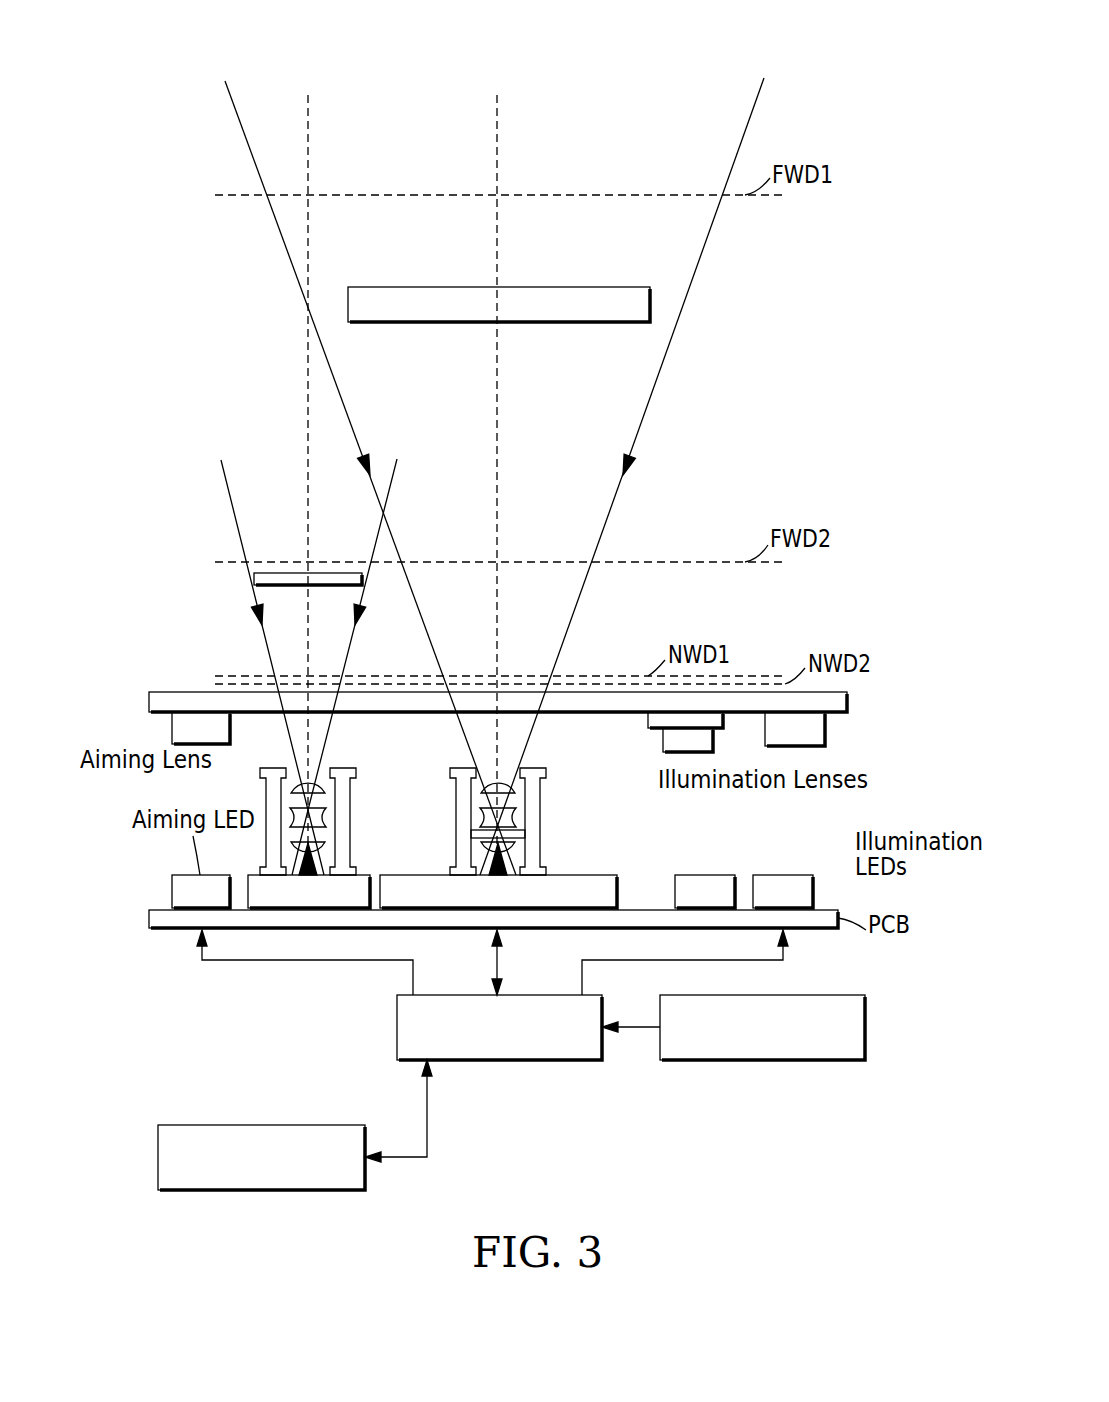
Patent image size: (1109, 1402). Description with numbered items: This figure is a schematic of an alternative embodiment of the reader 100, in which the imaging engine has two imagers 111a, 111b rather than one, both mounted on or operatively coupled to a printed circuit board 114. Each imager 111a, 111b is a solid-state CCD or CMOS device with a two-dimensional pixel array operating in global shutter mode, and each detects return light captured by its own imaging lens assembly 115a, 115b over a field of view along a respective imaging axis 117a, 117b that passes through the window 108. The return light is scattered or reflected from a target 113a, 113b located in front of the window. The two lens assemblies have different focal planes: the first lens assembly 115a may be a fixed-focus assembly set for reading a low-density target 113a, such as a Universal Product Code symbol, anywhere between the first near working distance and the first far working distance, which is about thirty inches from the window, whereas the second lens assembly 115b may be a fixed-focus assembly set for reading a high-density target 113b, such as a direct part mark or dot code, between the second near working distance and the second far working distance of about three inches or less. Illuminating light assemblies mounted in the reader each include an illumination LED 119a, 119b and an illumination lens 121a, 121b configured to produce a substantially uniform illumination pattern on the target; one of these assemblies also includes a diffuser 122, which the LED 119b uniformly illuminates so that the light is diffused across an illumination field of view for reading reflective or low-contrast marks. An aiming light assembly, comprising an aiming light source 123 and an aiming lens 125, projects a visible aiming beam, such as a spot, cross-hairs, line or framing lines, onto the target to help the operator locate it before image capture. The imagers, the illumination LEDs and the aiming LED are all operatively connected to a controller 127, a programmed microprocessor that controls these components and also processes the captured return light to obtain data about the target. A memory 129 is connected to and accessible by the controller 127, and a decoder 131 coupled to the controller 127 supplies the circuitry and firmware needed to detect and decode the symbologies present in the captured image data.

The reader 100 is at (160, 36).
The window 108 is at (149, 703).
The first imager 111a is at (590, 875).
The second imager 111b is at (372, 875).
The first target 113a is at (573, 325).
The second target 113b is at (283, 572).
The printed circuit board 114 is at (149, 917).
The first imaging lens assembly 115a is at (450, 822).
The second imaging lens assembly 115b is at (260, 800).
The first imaging axis 117a is at (497, 137).
The second imaging axis 117b is at (308, 412).
The first illumination LED 119a is at (762, 876).
The second illumination LED 119b is at (700, 875).
The first illumination lens 121a is at (826, 730).
The second illumination lens 121b is at (663, 748).
The diffuser 122 is at (648, 722).
The aiming light source 123 is at (172, 883).
The aiming lens 125 is at (172, 730).
The controller 127 is at (503, 1063).
The memory 129 is at (158, 1157).
The decoder 131 is at (866, 1030).